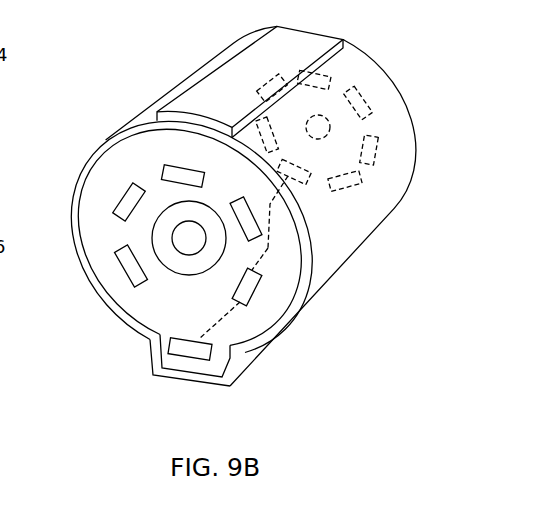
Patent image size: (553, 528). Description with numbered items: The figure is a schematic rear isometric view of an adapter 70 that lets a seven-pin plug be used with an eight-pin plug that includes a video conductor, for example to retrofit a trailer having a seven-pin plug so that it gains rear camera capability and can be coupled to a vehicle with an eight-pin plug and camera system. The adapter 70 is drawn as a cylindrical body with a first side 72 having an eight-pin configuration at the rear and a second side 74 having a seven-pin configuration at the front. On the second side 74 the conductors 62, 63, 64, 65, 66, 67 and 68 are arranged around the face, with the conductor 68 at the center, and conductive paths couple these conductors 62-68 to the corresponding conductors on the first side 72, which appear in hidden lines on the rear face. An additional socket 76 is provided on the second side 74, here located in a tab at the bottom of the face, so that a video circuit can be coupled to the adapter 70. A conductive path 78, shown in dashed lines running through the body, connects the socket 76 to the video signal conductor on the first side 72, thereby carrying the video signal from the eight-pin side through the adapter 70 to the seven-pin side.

The conductor 62 is at (258, 212).
The conductor 63 is at (185, 170).
The conductor 64 is at (234, 294).
The conductor 65 is at (121, 195).
The conductor 66 is at (241, 366).
The conductor 67 is at (128, 261).
The conductor 68 is at (192, 232).
The adapter 70 is at (188, 39).
The first side 72 is at (398, 59).
The second side 74 is at (92, 142).
The socket 76 is at (180, 345).
The conductive path 78 is at (268, 240).